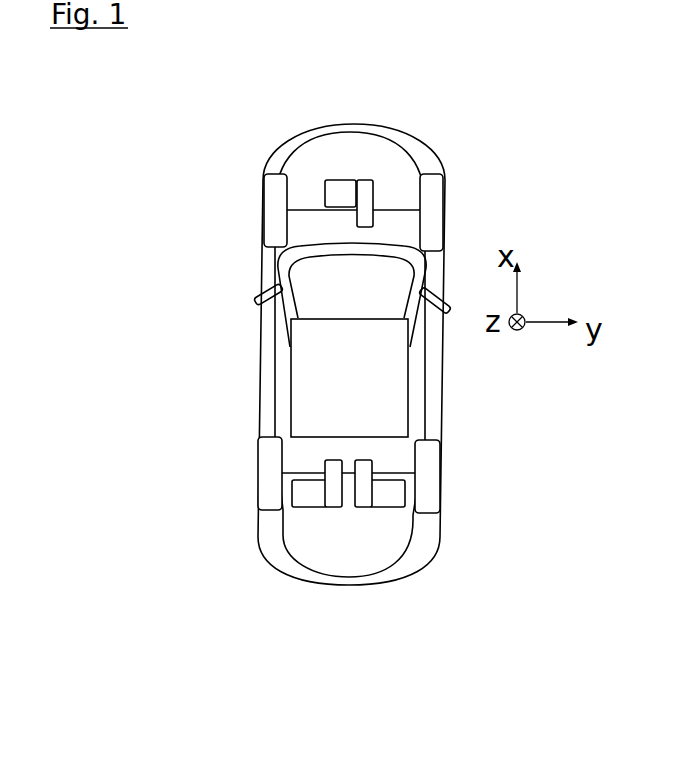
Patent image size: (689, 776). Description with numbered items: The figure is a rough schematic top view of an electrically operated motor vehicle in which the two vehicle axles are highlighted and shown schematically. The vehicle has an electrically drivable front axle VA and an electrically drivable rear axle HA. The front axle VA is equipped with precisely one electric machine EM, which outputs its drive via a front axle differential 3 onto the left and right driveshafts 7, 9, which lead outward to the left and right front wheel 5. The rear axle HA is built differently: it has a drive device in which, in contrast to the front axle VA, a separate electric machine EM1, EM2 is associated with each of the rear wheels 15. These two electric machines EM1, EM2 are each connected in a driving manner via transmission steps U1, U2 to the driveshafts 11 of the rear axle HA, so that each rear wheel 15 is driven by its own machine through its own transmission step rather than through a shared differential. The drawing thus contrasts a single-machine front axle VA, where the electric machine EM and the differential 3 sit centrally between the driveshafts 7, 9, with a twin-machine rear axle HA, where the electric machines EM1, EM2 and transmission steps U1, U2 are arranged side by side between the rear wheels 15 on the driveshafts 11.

The front axle differential 3 is at (362, 188).
The front wheel 5 is at (265, 177).
The driveshaft 7 is at (305, 210).
The driveshaft 9 is at (386, 210).
The driveshafts 11 is at (292, 477).
The rear wheels 15 is at (265, 470).
The electric machine EM is at (345, 187).
The electric machine EM1 is at (315, 507).
The electric machine EM2 is at (392, 507).
The transmission step U1 is at (335, 508).
The transmission step U2 is at (363, 510).
The front axle VA is at (247, 202).
The rear axle HA is at (237, 499).